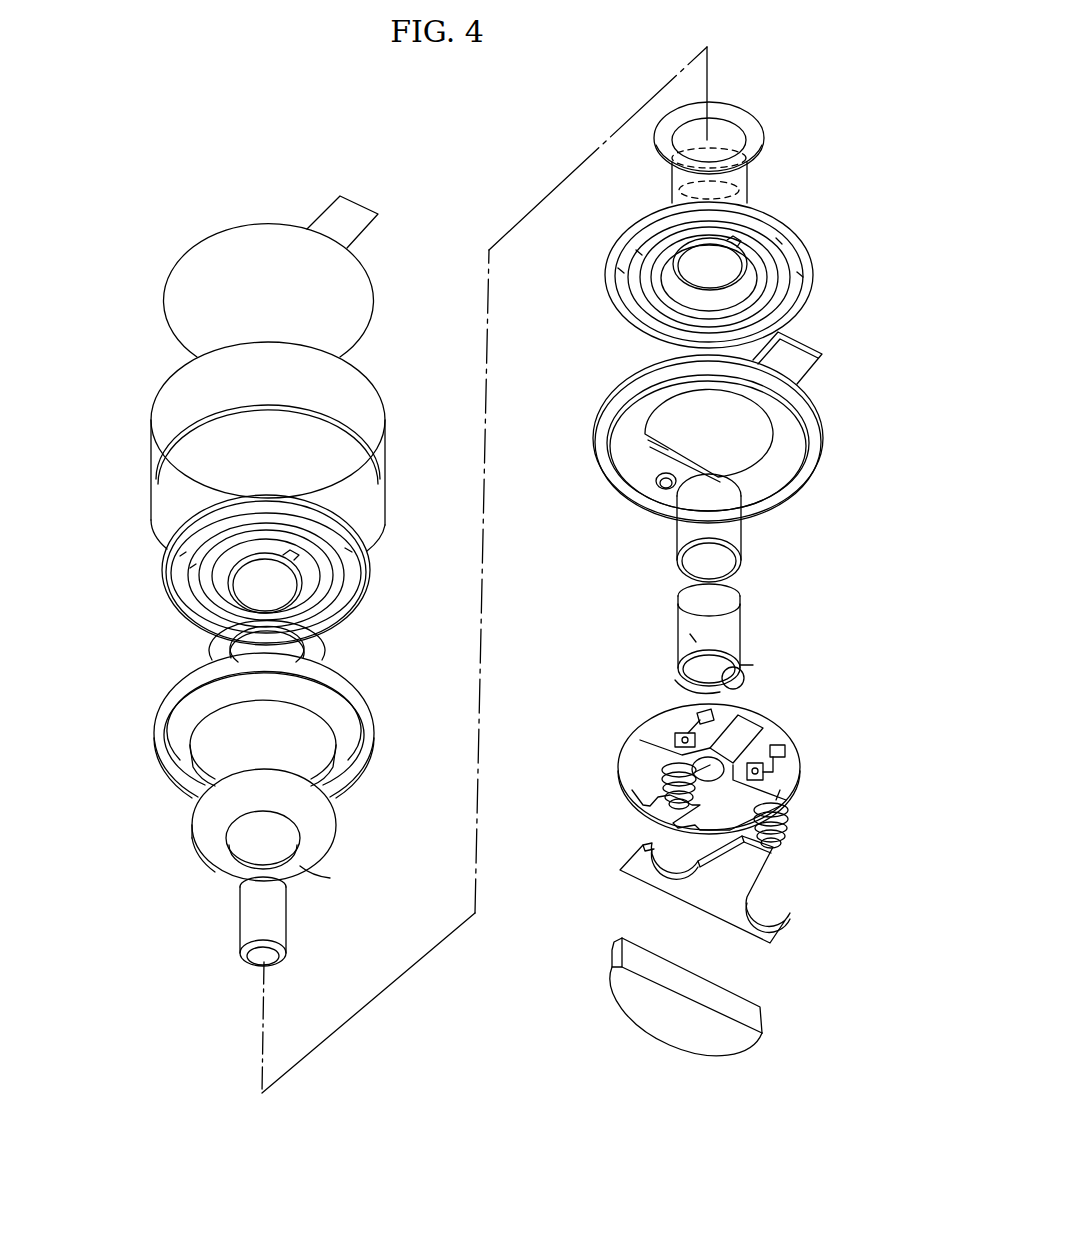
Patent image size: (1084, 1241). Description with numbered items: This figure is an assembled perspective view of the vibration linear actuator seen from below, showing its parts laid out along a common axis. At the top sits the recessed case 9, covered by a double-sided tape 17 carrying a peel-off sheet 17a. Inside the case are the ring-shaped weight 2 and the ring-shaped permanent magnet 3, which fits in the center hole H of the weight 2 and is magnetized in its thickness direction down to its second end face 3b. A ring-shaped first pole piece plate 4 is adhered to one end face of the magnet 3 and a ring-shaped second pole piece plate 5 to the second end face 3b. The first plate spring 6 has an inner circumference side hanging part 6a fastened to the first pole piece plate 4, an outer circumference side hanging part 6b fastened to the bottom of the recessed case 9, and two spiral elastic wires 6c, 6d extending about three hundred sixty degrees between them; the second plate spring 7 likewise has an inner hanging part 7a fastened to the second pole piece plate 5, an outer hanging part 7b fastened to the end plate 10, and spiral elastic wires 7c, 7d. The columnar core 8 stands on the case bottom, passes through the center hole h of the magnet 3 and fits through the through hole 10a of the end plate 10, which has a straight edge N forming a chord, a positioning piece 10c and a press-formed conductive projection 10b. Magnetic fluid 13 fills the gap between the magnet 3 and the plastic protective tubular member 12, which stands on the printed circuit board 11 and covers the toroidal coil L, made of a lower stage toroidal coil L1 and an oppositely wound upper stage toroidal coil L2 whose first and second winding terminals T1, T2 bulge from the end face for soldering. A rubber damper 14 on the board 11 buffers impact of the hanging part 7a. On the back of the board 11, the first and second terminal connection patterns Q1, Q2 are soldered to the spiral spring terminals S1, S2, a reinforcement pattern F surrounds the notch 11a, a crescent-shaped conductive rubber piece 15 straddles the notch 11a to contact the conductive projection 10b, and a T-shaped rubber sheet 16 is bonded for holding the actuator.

The ring-shaped weight 2 is at (289, 715).
The ring-shaped permanent magnet 3 is at (273, 843).
The second end face 3b is at (305, 870).
The first pole piece plate 4 is at (310, 650).
The second pole piece plate 5 is at (757, 123).
The first plate spring 6 is at (262, 583).
The inner circumference side hanging part 6a is at (225, 583).
The outer circumference side hanging part 6b is at (180, 607).
The spiral elastic wire 6c is at (350, 555).
The spiral elastic wire 6d is at (185, 588).
The second plate spring 7 is at (718, 278).
The inner circumference side hanging part 7a is at (673, 278).
The outer circumference side hanging part 7b is at (803, 297).
The spiral elastic wire 7c is at (778, 242).
The spiral elastic wire 7d is at (632, 285).
The columnar core 8 is at (240, 925).
The recessed case 9 is at (157, 417).
The end plate 10 is at (755, 457).
The through hole 10a is at (753, 434).
The conductive projection 10b is at (668, 487).
The positioning piece 10c is at (802, 360).
The printed circuit board 11 is at (707, 777).
The notch 11a is at (630, 833).
The protective tubular member 12 is at (735, 530).
The magnetic fluid 13 is at (737, 187).
The rubber damper 14 is at (691, 675).
The conductive rubber piece 15 is at (678, 1033).
The rubber sheet 16 is at (712, 900).
The double-sided tape 17 is at (355, 295).
The peel-off sheet 17a is at (338, 200).
The center hole H is at (305, 730).
The center hole h is at (248, 850).
The straight edge N is at (665, 447).
The toroidal coil L is at (745, 639).
The lower stage toroidal coil L1 is at (738, 642).
The upper stage toroidal coil L2 is at (735, 603).
The first winding terminal T1 is at (747, 658).
The second winding terminal T2 is at (692, 638).
The first terminal connection pattern Q1 is at (773, 783).
The second terminal connection pattern Q2 is at (677, 730).
The spiral spring terminal S1 is at (783, 827).
The spiral spring terminal S2 is at (653, 777).
The reinforcement pattern F is at (743, 728).